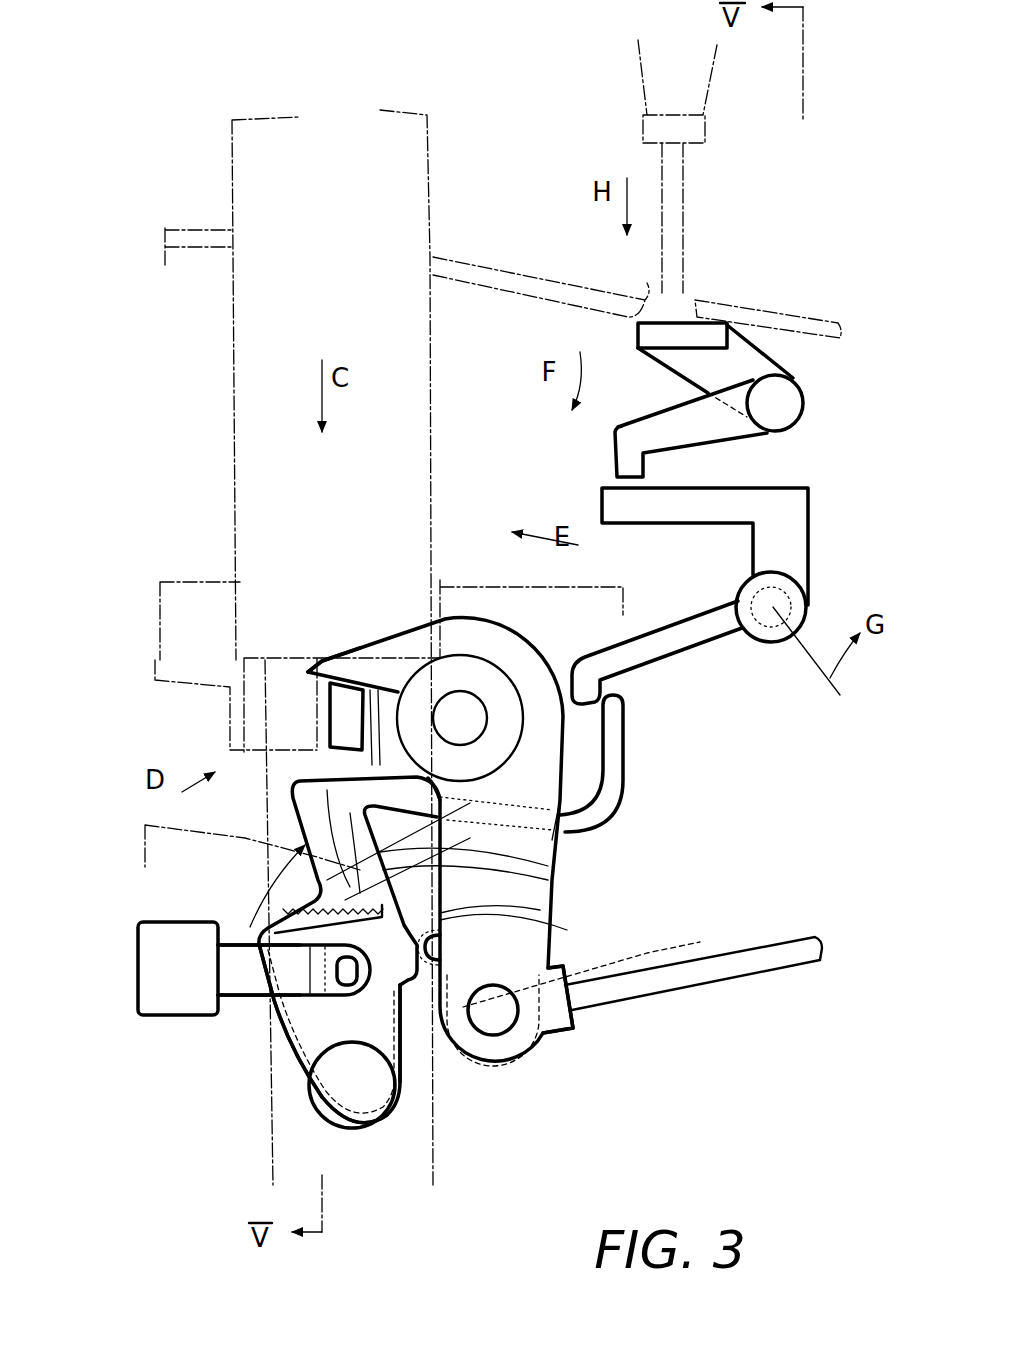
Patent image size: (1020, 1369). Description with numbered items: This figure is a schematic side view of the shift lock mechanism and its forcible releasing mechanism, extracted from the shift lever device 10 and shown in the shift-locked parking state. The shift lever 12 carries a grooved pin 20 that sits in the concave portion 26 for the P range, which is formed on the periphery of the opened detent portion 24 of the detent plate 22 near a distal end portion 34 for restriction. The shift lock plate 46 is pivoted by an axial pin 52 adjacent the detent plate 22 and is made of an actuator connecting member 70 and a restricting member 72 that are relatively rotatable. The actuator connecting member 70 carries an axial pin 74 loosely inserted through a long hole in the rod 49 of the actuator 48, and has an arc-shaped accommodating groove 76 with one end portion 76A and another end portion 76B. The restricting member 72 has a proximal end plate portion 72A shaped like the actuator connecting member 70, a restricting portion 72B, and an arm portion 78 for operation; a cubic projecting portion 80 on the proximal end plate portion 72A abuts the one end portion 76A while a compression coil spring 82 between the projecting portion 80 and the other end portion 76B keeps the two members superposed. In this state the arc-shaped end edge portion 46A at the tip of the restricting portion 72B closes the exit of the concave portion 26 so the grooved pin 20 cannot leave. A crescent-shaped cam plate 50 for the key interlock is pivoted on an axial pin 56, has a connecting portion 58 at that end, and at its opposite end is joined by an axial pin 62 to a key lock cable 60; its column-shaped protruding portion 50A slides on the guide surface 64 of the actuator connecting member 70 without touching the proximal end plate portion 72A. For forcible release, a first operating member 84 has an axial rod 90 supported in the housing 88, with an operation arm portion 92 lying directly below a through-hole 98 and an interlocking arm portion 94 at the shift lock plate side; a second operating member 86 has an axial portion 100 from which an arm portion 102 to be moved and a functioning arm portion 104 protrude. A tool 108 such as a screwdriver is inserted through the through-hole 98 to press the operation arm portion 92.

The shift lever device 10 is at (230, 180).
The shift lever 12 is at (430, 150).
The grooved pin 20 is at (330, 705).
The detent plate 22 is at (190, 670).
The detent portion 24 is at (203, 703).
The concave portion for P range 26 is at (330, 668).
The distal end portion for restriction 34 is at (277, 773).
The shift lock plate 46 is at (232, 1115).
The end edge portion 46A is at (320, 735).
The actuator 48 is at (183, 1000).
The rod 49 is at (237, 950).
The cam plate 50 is at (560, 733).
The protruding portion 50A is at (553, 933).
The axial pin 52 is at (380, 1087).
The axial pin 56 is at (475, 707).
The connecting portion 58 is at (345, 660).
The key lock cable 60 is at (712, 980).
The axial pin 62 is at (500, 1023).
The guide surface 64 is at (547, 917).
The actuator connecting member 70 is at (303, 1053).
The restricting member 72 is at (248, 995).
The proximal end plate portion 72A is at (584, 966).
The restricting portion 72B is at (443, 847).
The axial pin 74 is at (408, 1025).
The accommodating groove 76 is at (345, 950).
The one end portion 76A is at (300, 975).
The other end portion 76B is at (553, 863).
The arm portion 78 is at (610, 780).
The projecting portion 80 is at (440, 913).
The compression coil spring 82 is at (445, 820).
The first operating member 84 is at (798, 437).
The second operating member 86 is at (812, 600).
The housing 88 is at (490, 265).
The axial rod 90 is at (787, 408).
The operation arm portion 92 is at (773, 355).
The interlocking arm portion 94 is at (680, 435).
The through-hole 98 is at (642, 284).
The axial portion 100 is at (773, 640).
The arm portion to be moved 102 is at (797, 525).
The functioning arm portion 104 is at (703, 633).
The tool 108 is at (687, 227).